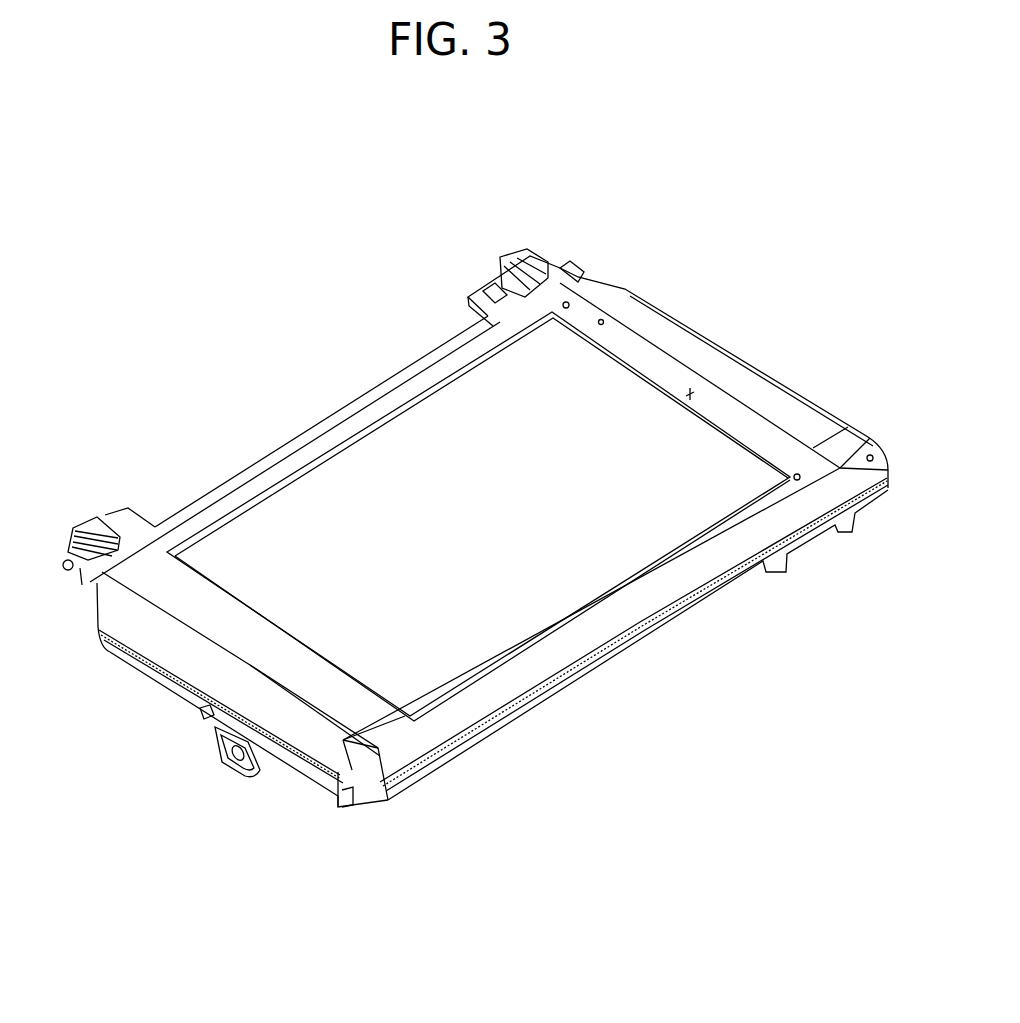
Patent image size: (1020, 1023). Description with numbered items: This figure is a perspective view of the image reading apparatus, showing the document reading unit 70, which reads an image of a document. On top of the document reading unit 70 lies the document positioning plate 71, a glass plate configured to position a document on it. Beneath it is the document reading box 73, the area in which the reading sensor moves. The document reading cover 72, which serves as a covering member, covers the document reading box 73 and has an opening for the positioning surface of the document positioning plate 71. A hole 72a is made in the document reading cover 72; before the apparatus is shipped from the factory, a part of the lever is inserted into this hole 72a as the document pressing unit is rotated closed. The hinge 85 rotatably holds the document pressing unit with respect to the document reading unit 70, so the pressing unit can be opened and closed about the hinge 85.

The document reading unit 70 is at (475, 540).
The document positioning plate 71 is at (425, 465).
The document reading cover 72 is at (484, 508).
The hole 72a is at (555, 275).
The document reading box 73 is at (310, 772).
The hinge 85 is at (88, 517).